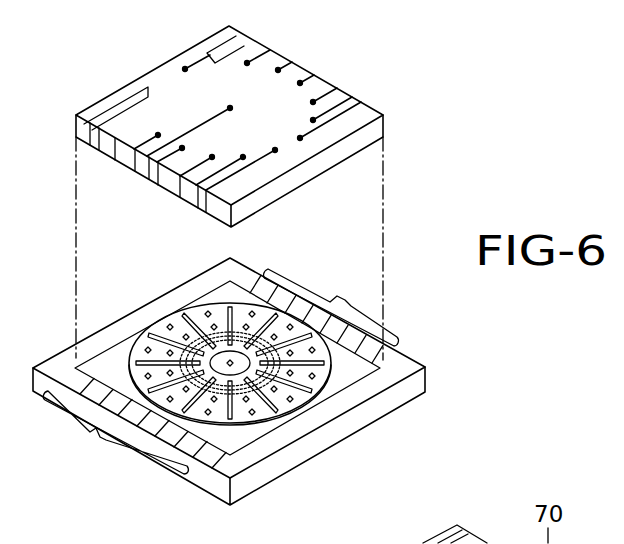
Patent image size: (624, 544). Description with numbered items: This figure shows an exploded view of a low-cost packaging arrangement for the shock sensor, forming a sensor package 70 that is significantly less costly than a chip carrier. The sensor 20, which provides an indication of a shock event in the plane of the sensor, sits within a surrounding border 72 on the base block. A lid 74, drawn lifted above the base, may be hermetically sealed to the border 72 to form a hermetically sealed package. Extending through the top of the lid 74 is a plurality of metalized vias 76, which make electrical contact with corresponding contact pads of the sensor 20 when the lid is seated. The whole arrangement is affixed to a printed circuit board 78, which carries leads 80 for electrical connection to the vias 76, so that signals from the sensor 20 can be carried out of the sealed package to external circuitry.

The sensor package 70 is at (467, 124).
The lid 74 is at (248, 83).
The metalized vias 76 is at (147, 118).
The surrounding border 72 is at (348, 368).
The leads 80 is at (220, 371).
The printed circuit board 78 is at (227, 462).
The sensor 20 is at (316, 405).